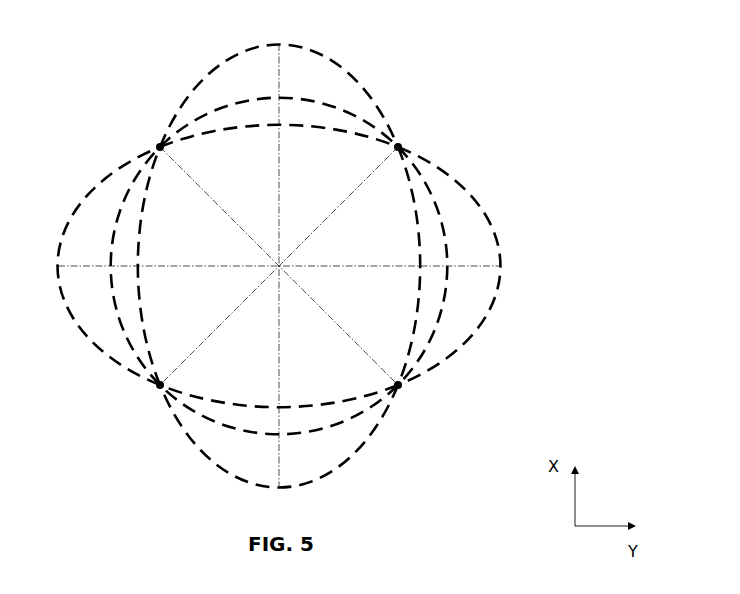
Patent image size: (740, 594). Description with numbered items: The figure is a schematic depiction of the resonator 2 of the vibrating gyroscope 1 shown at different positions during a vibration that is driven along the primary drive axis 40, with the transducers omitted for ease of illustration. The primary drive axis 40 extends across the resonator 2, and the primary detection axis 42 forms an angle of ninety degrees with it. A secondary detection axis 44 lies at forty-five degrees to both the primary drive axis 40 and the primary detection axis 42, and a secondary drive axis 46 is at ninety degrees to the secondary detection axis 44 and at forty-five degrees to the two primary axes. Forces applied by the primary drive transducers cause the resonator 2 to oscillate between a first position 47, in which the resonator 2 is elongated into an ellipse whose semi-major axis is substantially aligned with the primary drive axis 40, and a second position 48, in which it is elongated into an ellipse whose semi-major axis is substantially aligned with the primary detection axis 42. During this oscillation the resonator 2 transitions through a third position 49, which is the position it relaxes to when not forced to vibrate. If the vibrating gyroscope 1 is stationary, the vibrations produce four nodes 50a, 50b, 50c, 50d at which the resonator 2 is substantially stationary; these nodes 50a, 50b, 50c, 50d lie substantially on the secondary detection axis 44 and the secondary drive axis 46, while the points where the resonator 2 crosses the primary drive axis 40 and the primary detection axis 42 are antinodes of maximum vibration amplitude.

The vibrating gyroscope 1 is at (165, 78).
The resonator 2 is at (132, 184).
The primary drive axis 40 is at (280, 79).
The primary detection axis 42 is at (437, 266).
The secondary detection axis 44 is at (380, 190).
The secondary drive axis 46 is at (367, 350).
The first position 47 is at (367, 96).
The second position 48 is at (479, 211).
The third position 49 is at (379, 118).
The node 50a is at (158, 143).
The node 50b is at (159, 389).
The node 50c is at (404, 389).
The node 50d is at (404, 141).